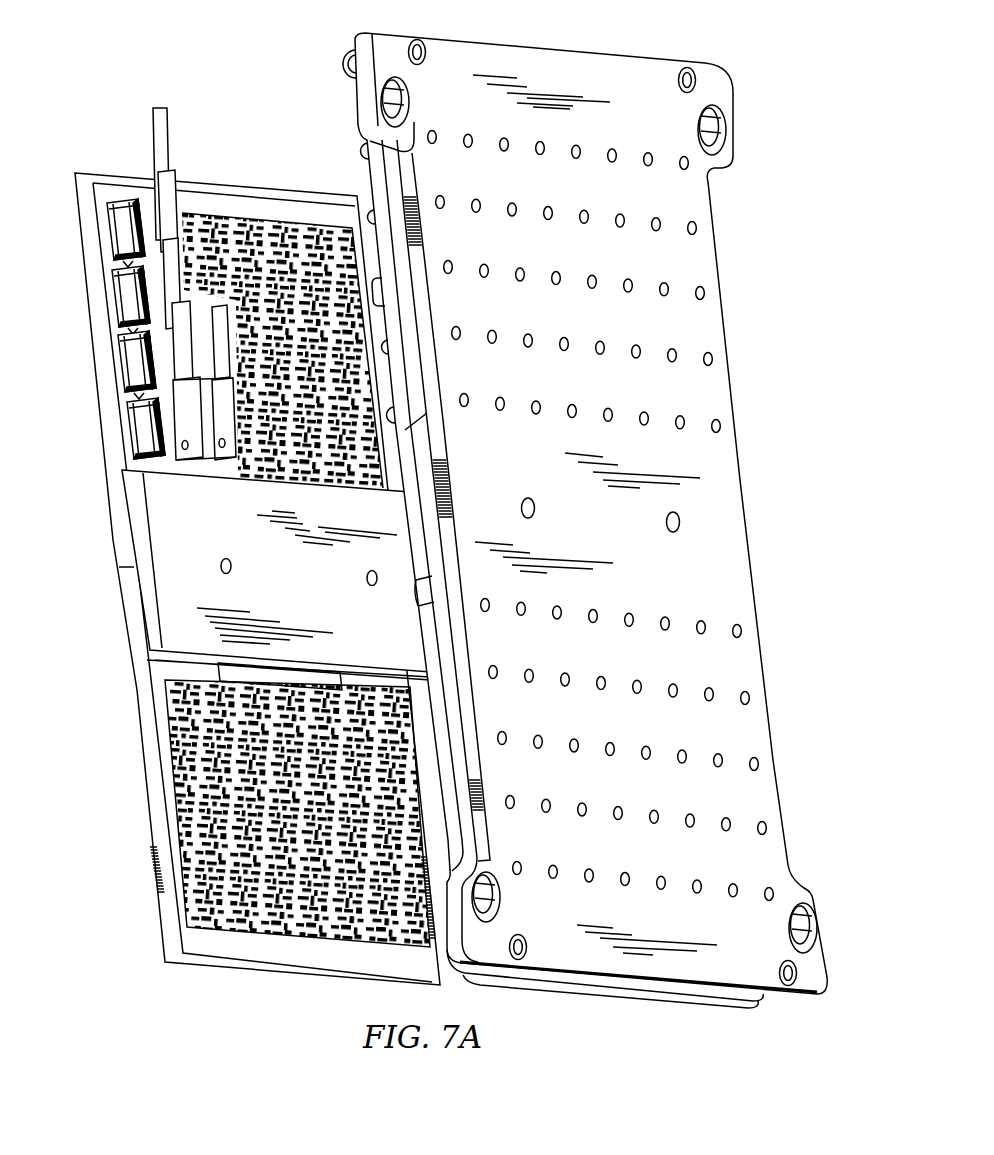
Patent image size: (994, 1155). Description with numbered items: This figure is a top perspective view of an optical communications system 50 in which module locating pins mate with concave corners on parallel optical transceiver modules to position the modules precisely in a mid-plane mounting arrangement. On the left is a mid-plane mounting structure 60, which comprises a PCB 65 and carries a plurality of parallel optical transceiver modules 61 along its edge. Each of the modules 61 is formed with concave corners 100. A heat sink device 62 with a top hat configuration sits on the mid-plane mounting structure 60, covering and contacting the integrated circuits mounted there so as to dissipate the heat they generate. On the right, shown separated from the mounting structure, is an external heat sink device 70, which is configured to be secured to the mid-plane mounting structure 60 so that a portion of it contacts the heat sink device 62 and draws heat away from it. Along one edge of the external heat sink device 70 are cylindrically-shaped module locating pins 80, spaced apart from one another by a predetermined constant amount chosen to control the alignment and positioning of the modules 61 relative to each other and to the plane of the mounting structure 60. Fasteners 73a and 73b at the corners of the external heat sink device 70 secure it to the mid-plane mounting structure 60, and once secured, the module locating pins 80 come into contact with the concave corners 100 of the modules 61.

The optical communications system 50 is at (194, 86).
The mid-plane mounting structure 60 is at (200, 182).
The parallel optical transceiver module 61 is at (130, 221).
The heat sink device 62 is at (165, 522).
The PCB 65 is at (177, 775).
The external heat sink device 70 is at (623, 53).
The fastener 73a is at (342, 72).
The fastener 73b is at (585, 1000).
The module locating pin 80 is at (355, 150).
The concave corner 100 is at (148, 398).